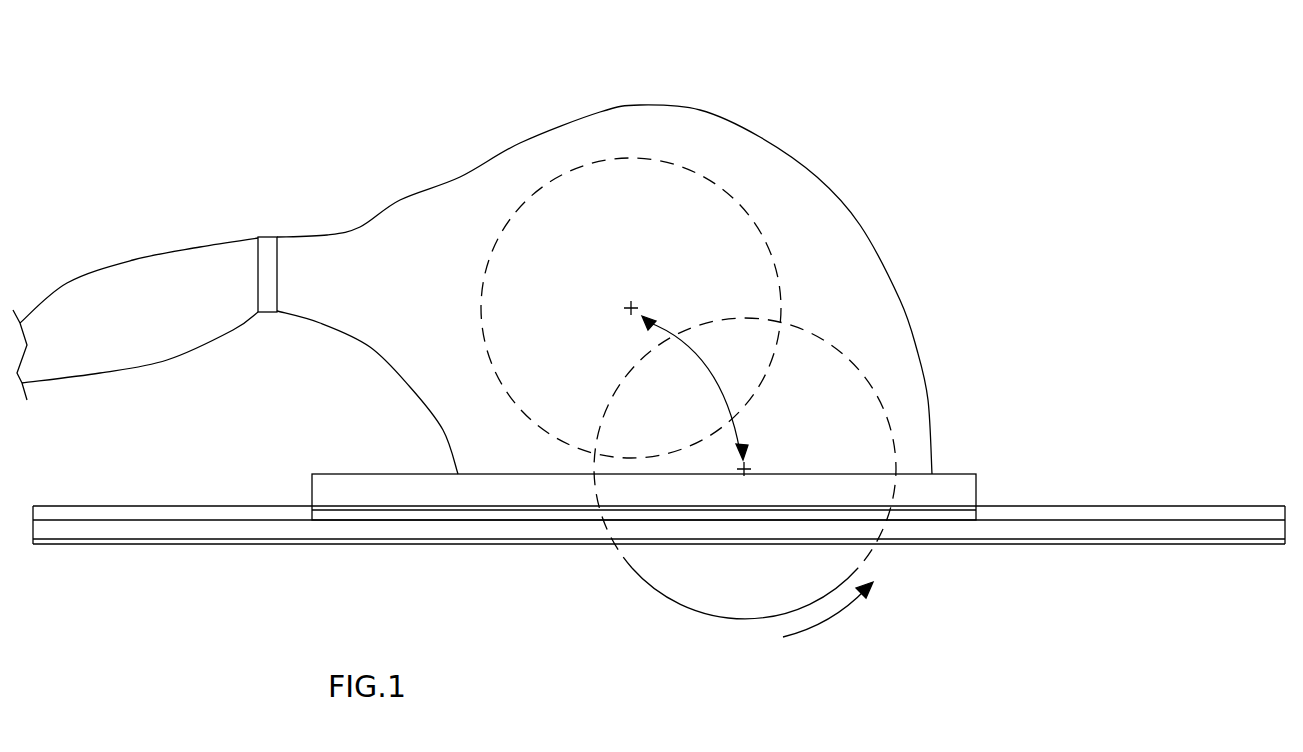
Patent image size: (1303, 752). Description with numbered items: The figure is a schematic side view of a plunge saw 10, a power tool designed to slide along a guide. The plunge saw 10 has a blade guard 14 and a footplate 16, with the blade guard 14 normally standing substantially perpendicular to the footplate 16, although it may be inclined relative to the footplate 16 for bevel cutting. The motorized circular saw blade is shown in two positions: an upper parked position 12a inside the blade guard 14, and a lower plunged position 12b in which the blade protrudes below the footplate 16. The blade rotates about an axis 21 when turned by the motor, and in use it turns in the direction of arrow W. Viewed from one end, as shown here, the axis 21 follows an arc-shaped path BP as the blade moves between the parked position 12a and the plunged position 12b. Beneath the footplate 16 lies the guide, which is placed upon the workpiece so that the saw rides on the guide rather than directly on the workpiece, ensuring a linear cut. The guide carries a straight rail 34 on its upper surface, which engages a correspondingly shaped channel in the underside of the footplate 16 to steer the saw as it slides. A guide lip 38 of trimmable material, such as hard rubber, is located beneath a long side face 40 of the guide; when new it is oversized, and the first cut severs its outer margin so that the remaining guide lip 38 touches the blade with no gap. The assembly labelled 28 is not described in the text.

The plunge saw 10 is at (676, 311).
The blade guard 14 is at (833, 190).
The footplate 16 is at (962, 474).
The parked position 12a is at (705, 177).
The plunged position 12b is at (772, 590).
The axis 21 is at (631, 305).
The arc-shaped path BP is at (707, 370).
The arrow W is at (828, 616).
The workpiece 28 is at (659, 509).
The straight rail 34 is at (1102, 512).
The guide lip 38 is at (1127, 538).
The long side face 40 is at (1195, 530).